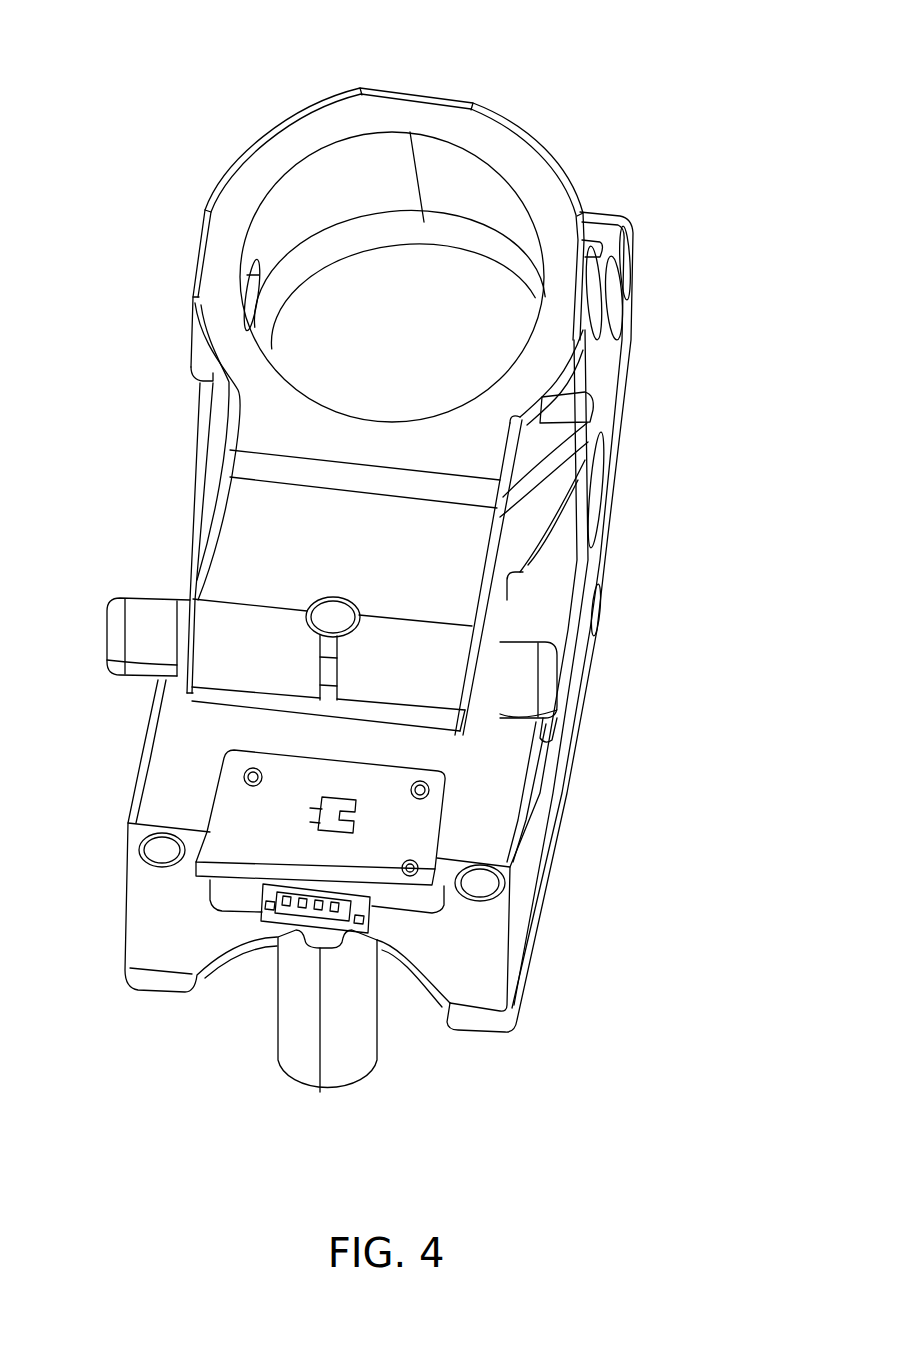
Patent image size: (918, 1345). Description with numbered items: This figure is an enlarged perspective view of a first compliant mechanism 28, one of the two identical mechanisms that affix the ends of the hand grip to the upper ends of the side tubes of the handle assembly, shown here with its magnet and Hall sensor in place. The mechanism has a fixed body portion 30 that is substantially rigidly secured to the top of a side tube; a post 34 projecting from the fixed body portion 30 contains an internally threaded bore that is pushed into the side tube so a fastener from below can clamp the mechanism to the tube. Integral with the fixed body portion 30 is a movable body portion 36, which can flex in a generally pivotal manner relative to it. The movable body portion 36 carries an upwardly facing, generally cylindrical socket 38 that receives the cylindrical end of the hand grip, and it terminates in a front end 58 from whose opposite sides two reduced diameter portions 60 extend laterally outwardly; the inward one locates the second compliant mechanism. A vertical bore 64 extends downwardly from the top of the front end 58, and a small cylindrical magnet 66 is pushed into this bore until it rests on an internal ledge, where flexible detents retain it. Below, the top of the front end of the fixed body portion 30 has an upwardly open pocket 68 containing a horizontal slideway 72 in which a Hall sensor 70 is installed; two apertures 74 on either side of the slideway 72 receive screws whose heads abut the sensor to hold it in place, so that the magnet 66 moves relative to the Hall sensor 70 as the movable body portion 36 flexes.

The first compliant mechanism 28 is at (628, 118).
The fixed body portion 30 is at (497, 802).
The post 34 is at (353, 1037).
The movable body portion 36 is at (463, 533).
The socket 38 is at (421, 122).
The front end 58 is at (437, 640).
The reduced diameter portion 60 is at (143, 603).
The vertical bore 64 is at (330, 597).
The magnet 66 is at (326, 694).
The pocket 68 is at (400, 915).
The Hall sensor 70 is at (251, 838).
The slideway 72 is at (483, 870).
The aperture 74 is at (157, 850).